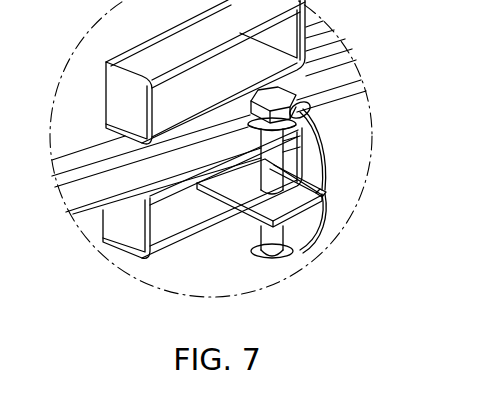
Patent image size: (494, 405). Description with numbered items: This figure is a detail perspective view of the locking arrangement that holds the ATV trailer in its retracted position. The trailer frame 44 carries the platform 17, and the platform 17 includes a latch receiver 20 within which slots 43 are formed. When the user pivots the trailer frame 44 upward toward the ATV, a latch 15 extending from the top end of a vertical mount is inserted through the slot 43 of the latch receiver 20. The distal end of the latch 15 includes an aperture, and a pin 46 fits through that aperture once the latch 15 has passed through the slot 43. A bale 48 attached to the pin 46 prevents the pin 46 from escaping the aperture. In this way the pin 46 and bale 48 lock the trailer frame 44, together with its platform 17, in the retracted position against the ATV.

The platform 17 is at (95, 92).
The slots 43 is at (117, 98).
The trailer frame 44 is at (80, 155).
The latch 15 is at (230, 185).
The pin 46 is at (322, 197).
The bale 48 is at (307, 247).
The latch receivers 20 is at (302, 185).